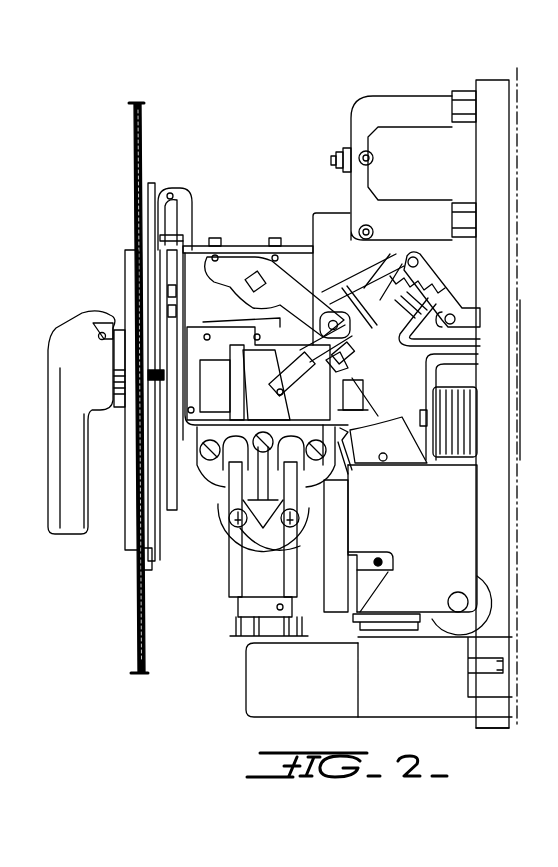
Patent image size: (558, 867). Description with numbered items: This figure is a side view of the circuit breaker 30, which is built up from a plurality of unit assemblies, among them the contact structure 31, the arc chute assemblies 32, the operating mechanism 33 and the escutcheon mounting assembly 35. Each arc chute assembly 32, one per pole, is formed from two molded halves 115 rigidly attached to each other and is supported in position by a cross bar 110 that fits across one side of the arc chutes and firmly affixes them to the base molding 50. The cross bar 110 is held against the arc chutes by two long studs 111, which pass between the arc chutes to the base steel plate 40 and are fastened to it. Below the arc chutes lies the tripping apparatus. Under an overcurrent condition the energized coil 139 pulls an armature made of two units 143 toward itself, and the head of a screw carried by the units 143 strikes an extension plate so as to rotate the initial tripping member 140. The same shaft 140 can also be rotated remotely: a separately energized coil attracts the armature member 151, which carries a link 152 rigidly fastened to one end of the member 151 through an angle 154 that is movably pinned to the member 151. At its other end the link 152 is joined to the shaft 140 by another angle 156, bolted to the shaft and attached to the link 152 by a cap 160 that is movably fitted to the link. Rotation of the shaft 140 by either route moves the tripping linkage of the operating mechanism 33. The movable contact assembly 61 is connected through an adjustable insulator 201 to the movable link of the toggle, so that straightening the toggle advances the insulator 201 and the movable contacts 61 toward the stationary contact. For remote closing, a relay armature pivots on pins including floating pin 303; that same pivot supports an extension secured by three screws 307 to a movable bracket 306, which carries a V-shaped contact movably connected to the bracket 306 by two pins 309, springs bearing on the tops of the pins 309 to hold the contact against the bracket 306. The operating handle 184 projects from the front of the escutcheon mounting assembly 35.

The circuit breaker 30 is at (524, 112).
The contact structure 31 is at (396, 240).
The arc chute assemblies 32 is at (372, 113).
The operating mechanism 33 is at (352, 286).
The escutcheon mounting assembly 35 is at (135, 246).
The base steel plate 40 is at (520, 392).
The base molding 50 is at (493, 82).
The movable contact assembly 61 is at (420, 262).
The cross bar 110 is at (345, 145).
The long studs 111 is at (333, 160).
The molded halves 115 is at (405, 94).
The overcurrent trip coil 139 is at (424, 392).
The initial tripping member (shaft) 140 is at (358, 396).
The armature units 143 is at (382, 464).
The armature member 151 is at (226, 322).
The link 152 is at (300, 366).
The angle 154 is at (284, 386).
The angle 156 is at (337, 354).
The cap 160 is at (352, 369).
The operating handle 184 is at (53, 386).
The adjustable insulator 201 is at (412, 312).
The floating pivot pin 303 is at (238, 612).
The movable bracket 306 is at (230, 583).
The screws 307 is at (262, 544).
The pins 309 is at (230, 516).